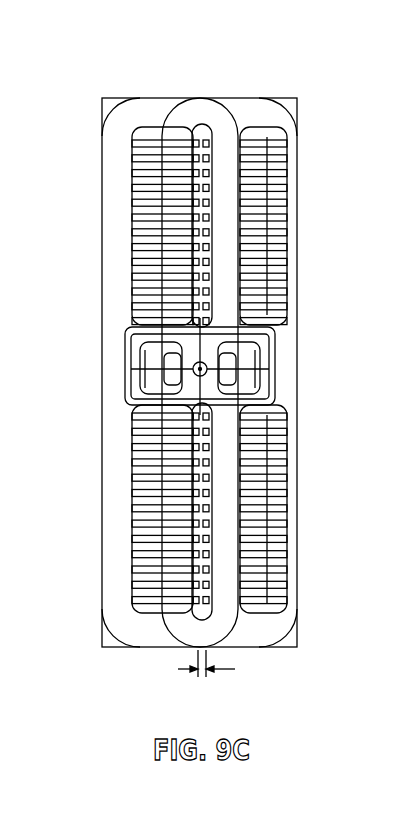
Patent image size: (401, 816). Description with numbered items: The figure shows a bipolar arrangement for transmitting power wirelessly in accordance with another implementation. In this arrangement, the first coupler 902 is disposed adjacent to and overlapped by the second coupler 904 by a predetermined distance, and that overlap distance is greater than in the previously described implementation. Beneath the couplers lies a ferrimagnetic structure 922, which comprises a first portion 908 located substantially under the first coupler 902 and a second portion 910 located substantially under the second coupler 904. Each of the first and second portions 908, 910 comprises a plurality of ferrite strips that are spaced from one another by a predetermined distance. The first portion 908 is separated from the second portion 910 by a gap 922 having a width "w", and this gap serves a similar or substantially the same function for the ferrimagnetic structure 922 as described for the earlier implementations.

The first coupler 902 is at (137, 105).
The second coupler 904 is at (247, 105).
The first portion 908 is at (197, 62).
The second portion 910 is at (285, 62).
The ferrimagnetic structure 922 is at (310, 122).